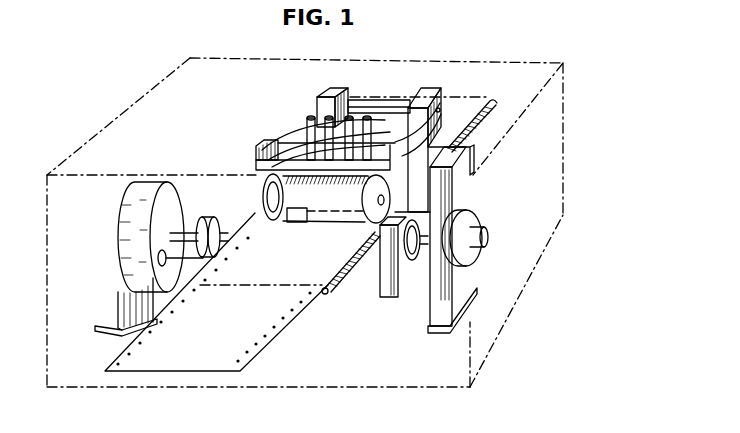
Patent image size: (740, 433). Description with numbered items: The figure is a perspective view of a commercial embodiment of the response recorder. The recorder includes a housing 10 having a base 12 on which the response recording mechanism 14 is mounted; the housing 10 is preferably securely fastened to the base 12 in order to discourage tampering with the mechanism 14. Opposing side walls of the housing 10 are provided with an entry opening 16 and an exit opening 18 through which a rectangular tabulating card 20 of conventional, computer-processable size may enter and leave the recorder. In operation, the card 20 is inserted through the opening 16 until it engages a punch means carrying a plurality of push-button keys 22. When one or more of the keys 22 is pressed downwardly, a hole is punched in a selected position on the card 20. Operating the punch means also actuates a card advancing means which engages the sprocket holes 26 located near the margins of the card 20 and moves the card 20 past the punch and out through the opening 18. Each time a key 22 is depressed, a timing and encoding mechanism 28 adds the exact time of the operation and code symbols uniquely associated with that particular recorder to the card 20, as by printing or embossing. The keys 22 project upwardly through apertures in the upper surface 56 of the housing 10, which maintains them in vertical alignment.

The housing 10 is at (517, 250).
The base 12 is at (418, 391).
The response recording mechanism 14 is at (516, 173).
The opening 16 is at (329, 308).
The opening 18 is at (455, 97).
The tabulating card 20 is at (274, 349).
The push-button keys 22 is at (288, 152).
The sprocket holes 26 is at (137, 347).
The timing and encoding mechanism 28 is at (112, 230).
The upper surface 56 is at (140, 107).